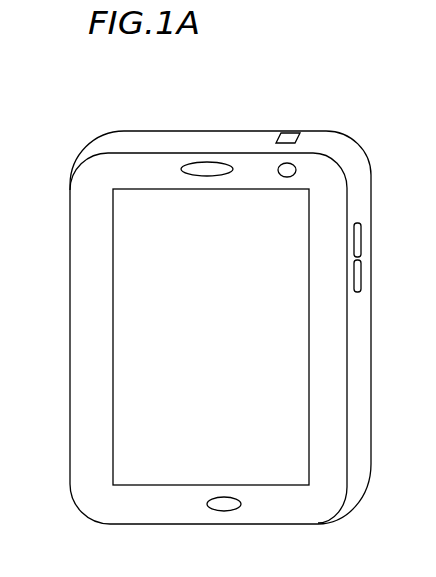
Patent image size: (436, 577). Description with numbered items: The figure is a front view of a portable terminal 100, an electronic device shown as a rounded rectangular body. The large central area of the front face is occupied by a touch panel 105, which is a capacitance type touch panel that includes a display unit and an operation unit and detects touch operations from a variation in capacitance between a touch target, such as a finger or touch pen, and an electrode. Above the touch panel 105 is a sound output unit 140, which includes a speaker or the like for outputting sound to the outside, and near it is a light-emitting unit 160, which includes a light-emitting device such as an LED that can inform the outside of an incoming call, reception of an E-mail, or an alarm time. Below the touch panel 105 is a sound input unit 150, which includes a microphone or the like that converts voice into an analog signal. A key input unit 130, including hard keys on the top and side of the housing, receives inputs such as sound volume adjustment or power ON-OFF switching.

The portable terminal 100 is at (233, 122).
The touch panel 105 is at (125, 278).
The key input unit 130 is at (305, 132).
The sound output unit 140 is at (182, 167).
The sound input unit 150 is at (242, 504).
The light-emitting unit 160 is at (297, 172).